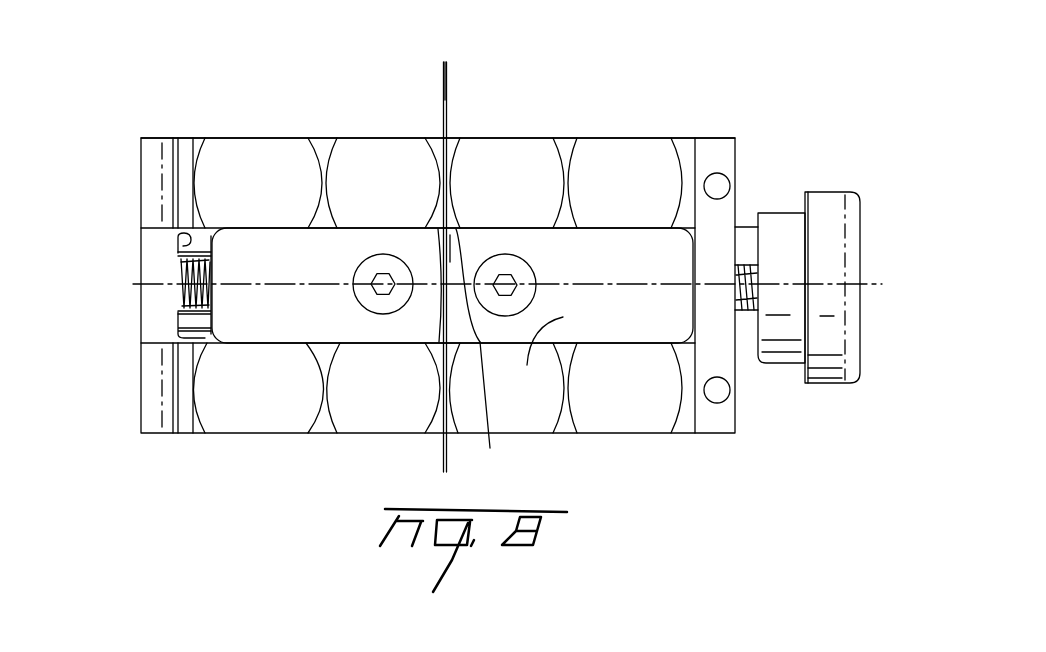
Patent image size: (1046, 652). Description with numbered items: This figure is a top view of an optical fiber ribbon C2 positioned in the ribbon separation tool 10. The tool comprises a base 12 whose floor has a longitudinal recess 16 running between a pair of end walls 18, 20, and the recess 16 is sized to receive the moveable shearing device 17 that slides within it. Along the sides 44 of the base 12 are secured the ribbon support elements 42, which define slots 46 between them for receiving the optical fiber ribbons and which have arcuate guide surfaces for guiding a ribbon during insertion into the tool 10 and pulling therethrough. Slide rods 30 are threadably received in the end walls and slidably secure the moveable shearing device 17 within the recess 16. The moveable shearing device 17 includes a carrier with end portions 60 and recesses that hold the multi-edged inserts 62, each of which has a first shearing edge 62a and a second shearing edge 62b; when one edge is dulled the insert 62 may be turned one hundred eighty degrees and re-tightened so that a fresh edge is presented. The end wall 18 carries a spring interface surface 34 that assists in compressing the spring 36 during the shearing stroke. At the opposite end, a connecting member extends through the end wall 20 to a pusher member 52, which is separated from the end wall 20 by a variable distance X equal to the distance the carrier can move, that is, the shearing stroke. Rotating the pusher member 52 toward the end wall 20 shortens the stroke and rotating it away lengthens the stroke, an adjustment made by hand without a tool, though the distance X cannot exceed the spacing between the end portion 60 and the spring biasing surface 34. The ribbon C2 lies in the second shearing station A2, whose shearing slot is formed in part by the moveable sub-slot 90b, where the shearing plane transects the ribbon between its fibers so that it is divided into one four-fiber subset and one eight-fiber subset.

The ribbon separation tool 10 is at (175, 57).
The base 12 is at (630, 137).
The longitudinal recess 16 is at (212, 232).
The moveable shearing device 17 is at (413, 241).
The end wall 18 is at (150, 298).
The end wall 20 is at (735, 398).
The slide rod 30 is at (202, 322).
The spring interface surface 34 is at (190, 237).
The spring 36 is at (177, 298).
The ribbon support element 42 is at (378, 137).
The side 44 is at (200, 137).
The slot 46 is at (450, 138).
The pusher member 52 is at (838, 373).
The end portion 60 is at (203, 320).
The multi-edged insert 62 is at (503, 330).
The first shearing edge 62a is at (450, 236).
The second shearing edge 62b is at (430, 322).
The moveable sub-slot 90b is at (488, 417).
The shearing station A2 is at (455, 208).
The optical fiber ribbon C2 is at (450, 87).
The variable distance X is at (745, 225).